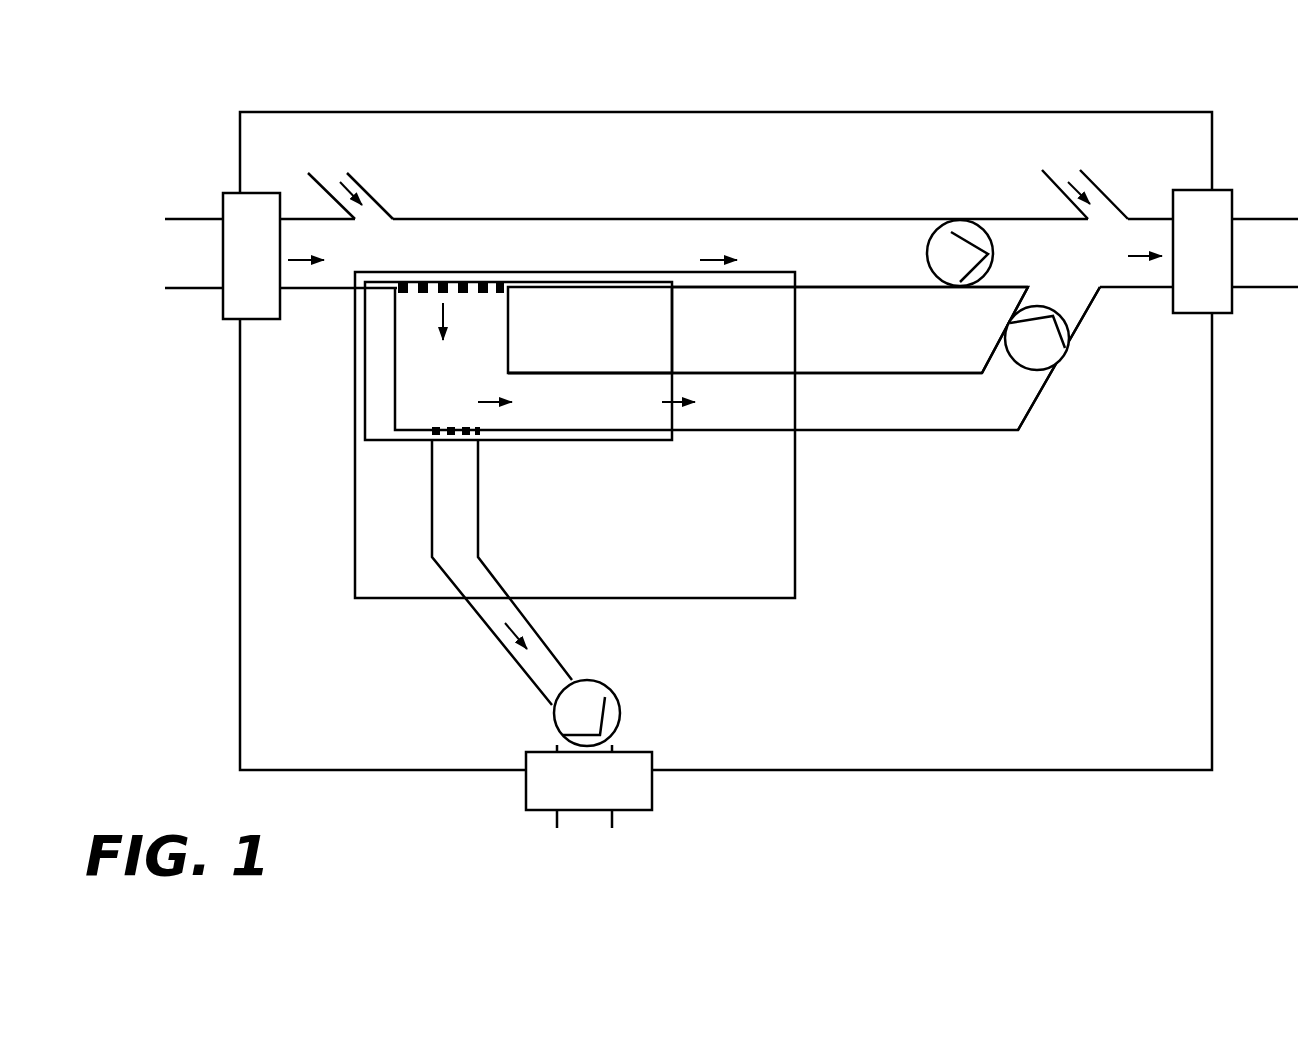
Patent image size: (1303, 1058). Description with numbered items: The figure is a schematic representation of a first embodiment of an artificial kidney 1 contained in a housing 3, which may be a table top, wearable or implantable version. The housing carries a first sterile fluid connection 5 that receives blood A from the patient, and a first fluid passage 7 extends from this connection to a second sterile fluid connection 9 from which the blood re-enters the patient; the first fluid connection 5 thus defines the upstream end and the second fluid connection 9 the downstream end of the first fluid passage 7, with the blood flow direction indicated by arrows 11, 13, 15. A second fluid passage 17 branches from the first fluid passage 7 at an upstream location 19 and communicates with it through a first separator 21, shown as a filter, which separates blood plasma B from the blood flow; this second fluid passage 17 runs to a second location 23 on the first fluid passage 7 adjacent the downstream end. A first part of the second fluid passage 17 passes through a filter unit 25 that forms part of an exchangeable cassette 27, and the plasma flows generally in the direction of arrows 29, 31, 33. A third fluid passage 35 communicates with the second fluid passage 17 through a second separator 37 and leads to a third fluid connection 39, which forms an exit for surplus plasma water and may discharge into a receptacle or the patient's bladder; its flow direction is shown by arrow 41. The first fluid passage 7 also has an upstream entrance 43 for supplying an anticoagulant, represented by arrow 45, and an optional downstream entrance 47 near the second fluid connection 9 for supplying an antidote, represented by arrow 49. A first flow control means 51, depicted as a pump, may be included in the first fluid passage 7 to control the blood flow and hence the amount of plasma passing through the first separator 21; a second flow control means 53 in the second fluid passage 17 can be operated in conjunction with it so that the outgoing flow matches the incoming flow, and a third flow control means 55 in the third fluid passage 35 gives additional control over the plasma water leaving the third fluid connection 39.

The artificial kidney 1 is at (150, 76).
The housing 3 is at (1170, 692).
The first sterile fluid connection 5 is at (251, 256).
The first fluid passage 7 is at (550, 233).
The second sterile fluid connection 9 is at (1202, 251).
The arrow 11 is at (300, 258).
The arrow 13 is at (713, 258).
The arrow 15 is at (1147, 252).
The second fluid passage 17 is at (760, 407).
The upstream location 19 is at (590, 280).
The first separator 21 is at (418, 295).
The second location 23 is at (1073, 288).
The filter unit 25 is at (377, 432).
The exchangeable cassette 27 is at (763, 587).
The arrow 29 is at (443, 323).
The arrow 31 is at (497, 404).
The arrow 33 is at (675, 403).
The third fluid passage 35 is at (460, 573).
The second separator 37 is at (450, 440).
The third fluid connection 39 is at (589, 786).
The arrow 41 is at (503, 642).
The upstream entrance 43 is at (322, 186).
The arrow 45 is at (360, 196).
The downstream entrance 47 is at (1066, 172).
The arrow 49 is at (1085, 174).
The first flow control means 51 is at (950, 237).
The second flow control means 53 is at (1040, 348).
The third flow control means 55 is at (553, 720).